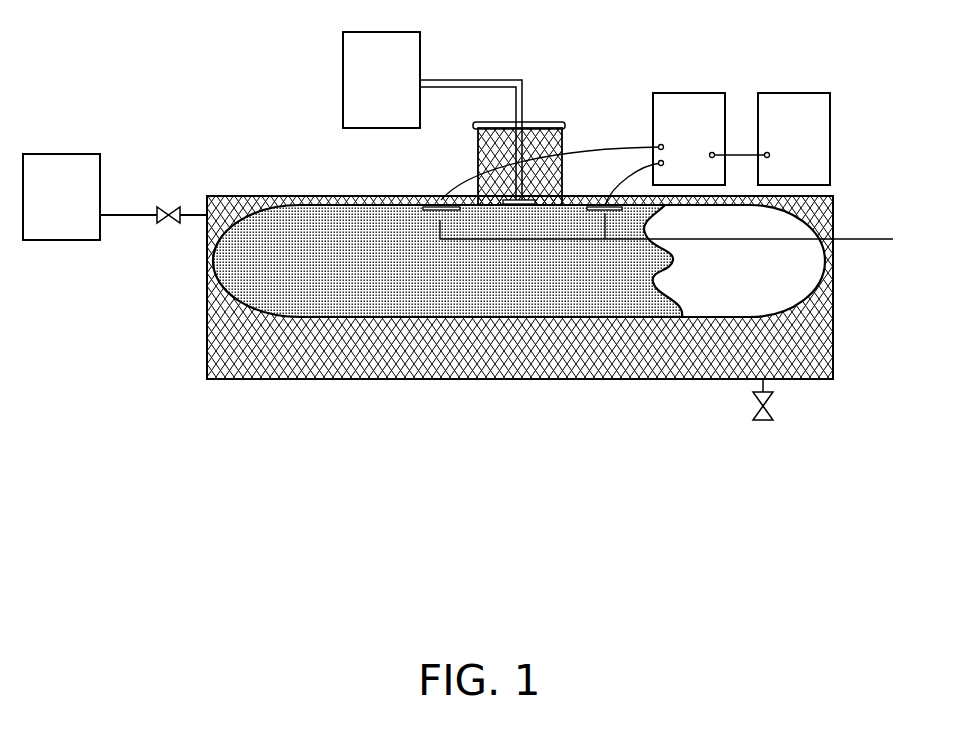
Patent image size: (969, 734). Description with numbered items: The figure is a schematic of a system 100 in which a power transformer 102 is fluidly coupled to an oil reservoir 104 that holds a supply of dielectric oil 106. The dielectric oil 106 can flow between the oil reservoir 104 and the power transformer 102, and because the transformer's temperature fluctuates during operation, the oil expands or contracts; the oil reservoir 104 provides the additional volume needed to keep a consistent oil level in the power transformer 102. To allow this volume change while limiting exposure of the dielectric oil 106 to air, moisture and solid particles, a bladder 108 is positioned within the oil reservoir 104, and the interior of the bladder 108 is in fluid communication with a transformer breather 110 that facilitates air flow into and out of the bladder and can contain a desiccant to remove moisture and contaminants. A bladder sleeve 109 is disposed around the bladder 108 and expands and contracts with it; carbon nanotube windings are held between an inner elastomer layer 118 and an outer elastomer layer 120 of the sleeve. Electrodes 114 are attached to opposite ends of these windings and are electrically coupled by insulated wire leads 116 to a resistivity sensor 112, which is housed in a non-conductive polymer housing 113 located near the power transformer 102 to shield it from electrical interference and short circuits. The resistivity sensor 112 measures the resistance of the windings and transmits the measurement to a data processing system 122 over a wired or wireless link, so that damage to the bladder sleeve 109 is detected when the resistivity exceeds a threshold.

The system 100 is at (132, 58).
The power transformer 102 is at (46, 215).
The oil reservoir 104 is at (294, 196).
The dielectric oil 106 is at (743, 353).
The bladder 108 is at (217, 330).
The bladder sleeve 109 is at (283, 293).
The transformer breather 110 is at (366, 90).
The resistivity sensor 112 is at (722, 97).
The housing 113 is at (672, 93).
The electrodes 114 is at (682, 232).
The insulated wire leads 116 is at (607, 193).
The inner elastomer layer 118 is at (753, 282).
The outer elastomer layer 120 is at (223, 253).
The data processing system 122 is at (817, 180).